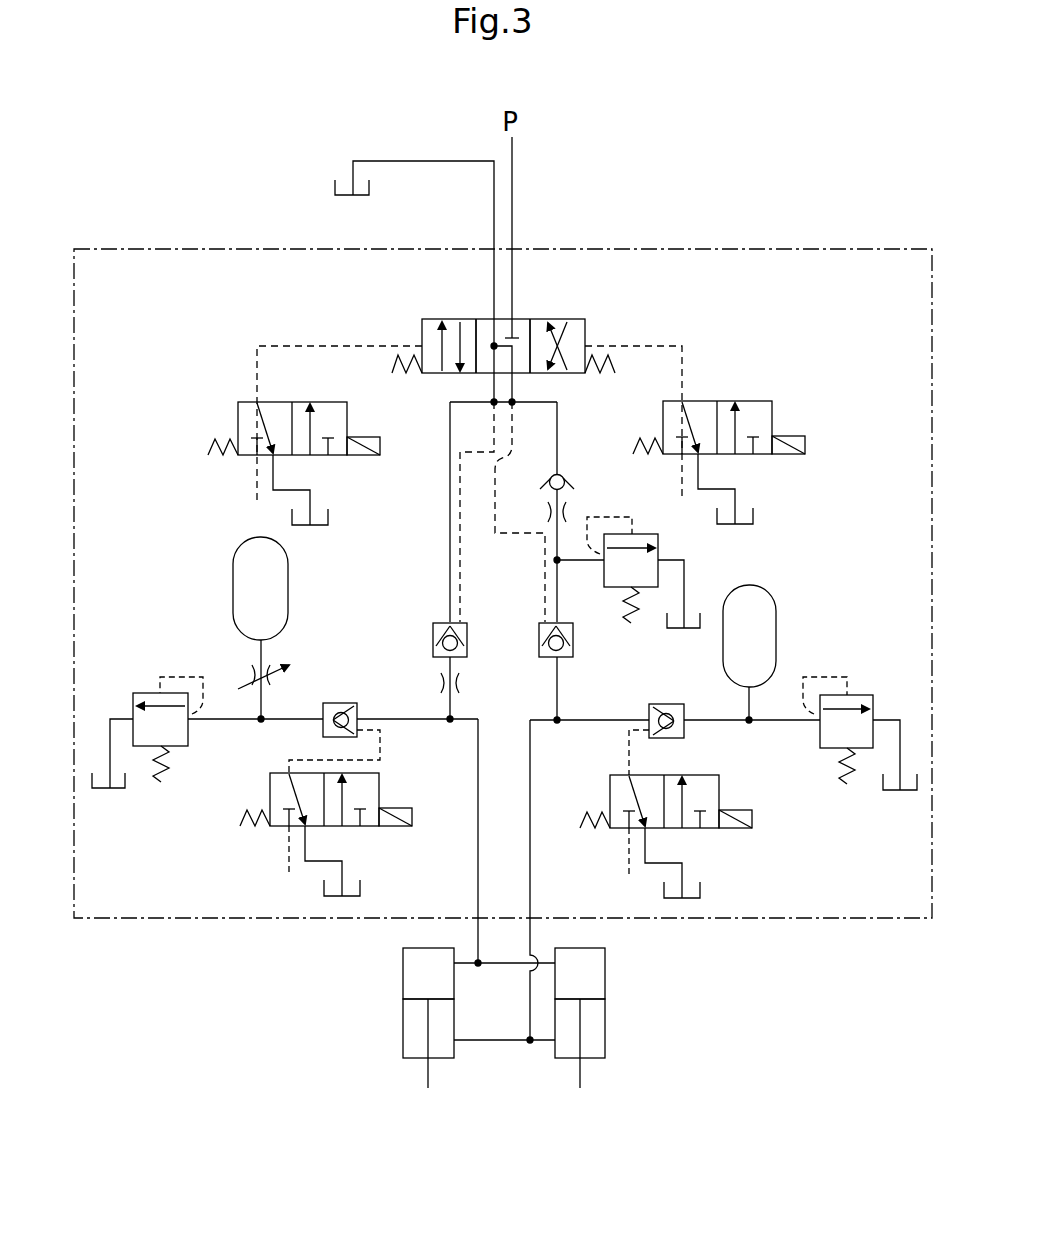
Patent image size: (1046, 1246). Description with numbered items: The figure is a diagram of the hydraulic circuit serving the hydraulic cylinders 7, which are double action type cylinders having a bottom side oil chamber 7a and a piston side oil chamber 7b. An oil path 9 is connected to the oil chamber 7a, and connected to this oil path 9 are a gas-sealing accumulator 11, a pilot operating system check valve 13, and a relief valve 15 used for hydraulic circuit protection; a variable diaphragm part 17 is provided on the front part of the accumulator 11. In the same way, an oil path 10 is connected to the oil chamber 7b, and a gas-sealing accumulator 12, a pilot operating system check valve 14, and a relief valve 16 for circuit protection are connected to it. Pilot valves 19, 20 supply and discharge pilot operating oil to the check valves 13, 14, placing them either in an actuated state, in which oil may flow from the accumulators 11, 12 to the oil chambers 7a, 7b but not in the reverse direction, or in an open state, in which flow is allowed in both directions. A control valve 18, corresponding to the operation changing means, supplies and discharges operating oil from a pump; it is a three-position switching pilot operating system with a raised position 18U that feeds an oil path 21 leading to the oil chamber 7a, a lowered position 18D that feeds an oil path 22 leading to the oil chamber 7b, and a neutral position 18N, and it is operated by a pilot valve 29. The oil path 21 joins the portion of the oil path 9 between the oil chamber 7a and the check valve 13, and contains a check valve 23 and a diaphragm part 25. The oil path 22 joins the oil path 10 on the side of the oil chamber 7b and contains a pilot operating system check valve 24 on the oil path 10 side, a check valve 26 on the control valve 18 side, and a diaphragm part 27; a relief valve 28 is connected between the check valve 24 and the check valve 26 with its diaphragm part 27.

The hydraulic cylinder 7 is at (505, 1018).
The bottom side oil chamber 7a is at (416, 985).
The piston side oil chamber 7b is at (504, 1043).
The oil path 9 is at (393, 717).
The oil path 10 is at (607, 717).
The gas-sealing accumulator 11 is at (289, 605).
The gas-sealing accumulator 12 is at (777, 627).
The pilot operating system check valve 13 is at (343, 703).
The pilot operating system check valve 14 is at (668, 703).
The relief valve 15 is at (152, 693).
The relief valve 16 is at (874, 700).
The variable diaphragm part 17 is at (250, 672).
The control valve 18 is at (419, 331).
The lowered position 18D is at (444, 330).
The raised position 18U is at (552, 330).
The neutral position 18N is at (520, 318).
The pilot valve 19 is at (270, 787).
The pilot valve 20 is at (721, 787).
The oil path 21 is at (449, 525).
The oil path 22 is at (559, 434).
The check valve 23 is at (433, 636).
The pilot operating system check valve 24 is at (538, 636).
The diaphragm part 25 is at (461, 683).
The check valve 26 is at (563, 479).
The diaphragm part 27 is at (566, 512).
The relief valve 28 is at (658, 543).
The pilot valve 29 is at (237, 415).